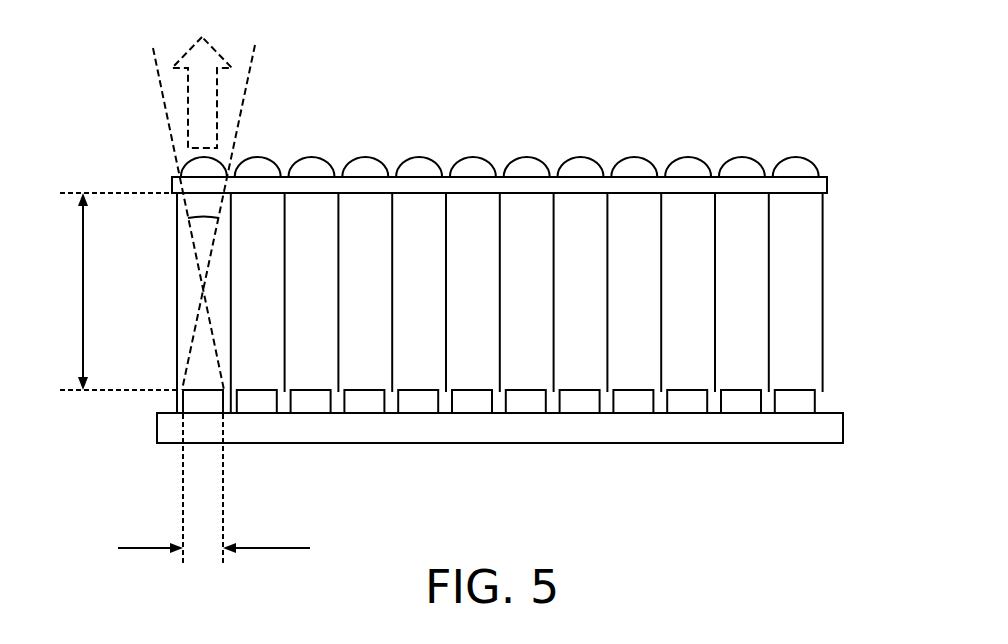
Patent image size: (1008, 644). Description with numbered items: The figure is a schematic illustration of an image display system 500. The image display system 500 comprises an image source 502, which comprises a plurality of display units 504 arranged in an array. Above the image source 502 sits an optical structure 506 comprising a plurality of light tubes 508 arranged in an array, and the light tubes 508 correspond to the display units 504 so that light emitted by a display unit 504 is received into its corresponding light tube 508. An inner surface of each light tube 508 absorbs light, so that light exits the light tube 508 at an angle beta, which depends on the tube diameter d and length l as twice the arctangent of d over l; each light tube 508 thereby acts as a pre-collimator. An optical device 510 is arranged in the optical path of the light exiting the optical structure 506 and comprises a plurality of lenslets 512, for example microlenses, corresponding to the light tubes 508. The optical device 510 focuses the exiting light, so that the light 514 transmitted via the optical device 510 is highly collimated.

The image display system 500 is at (846, 104).
The image source 502 is at (738, 425).
The display units 504 is at (512, 403).
The optical structure 506 is at (822, 282).
The light tubes 508 is at (263, 365).
The optical device 510 is at (657, 187).
The lenslets 512 is at (475, 168).
The light 514 is at (207, 107).